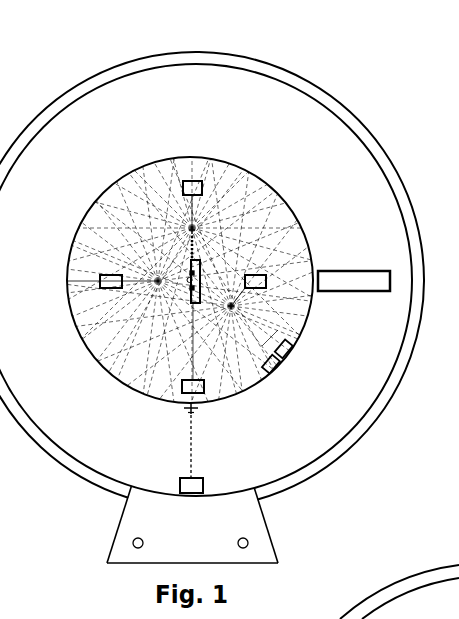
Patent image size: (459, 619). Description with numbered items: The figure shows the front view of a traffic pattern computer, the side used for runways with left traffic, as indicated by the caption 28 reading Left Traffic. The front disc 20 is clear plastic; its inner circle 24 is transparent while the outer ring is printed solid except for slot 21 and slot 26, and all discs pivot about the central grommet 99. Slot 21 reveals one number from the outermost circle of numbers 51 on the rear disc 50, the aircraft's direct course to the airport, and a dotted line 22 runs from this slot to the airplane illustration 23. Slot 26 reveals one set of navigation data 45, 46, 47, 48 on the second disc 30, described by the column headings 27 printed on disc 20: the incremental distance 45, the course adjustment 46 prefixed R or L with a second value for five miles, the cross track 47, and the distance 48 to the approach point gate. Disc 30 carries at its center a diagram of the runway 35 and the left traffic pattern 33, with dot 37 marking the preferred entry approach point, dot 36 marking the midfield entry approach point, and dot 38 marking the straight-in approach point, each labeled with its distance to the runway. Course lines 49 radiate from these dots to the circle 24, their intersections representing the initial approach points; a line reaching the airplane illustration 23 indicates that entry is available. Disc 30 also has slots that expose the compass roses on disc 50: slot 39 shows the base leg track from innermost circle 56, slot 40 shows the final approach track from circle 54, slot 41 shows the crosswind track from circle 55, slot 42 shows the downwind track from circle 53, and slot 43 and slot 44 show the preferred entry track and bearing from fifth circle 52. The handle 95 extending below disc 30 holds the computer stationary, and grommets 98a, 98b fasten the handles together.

The disc 20 is at (251, 144).
The slot 21 is at (204, 485).
The dotted line 22 is at (194, 450).
The airplane illustration 23 is at (186, 409).
The inner circle 24 is at (254, 393).
The slot 26 is at (358, 292).
The column headings 27 is at (358, 240).
The caption 28 is at (160, 109).
The disc 30 is at (288, 234).
The left traffic pattern 33 is at (201, 270).
The runway 35 is at (190, 291).
The dot 36 is at (159, 284).
The dot 37 is at (229, 304).
The dot 38 is at (191, 236).
The slot 39 is at (262, 292).
The slot 40 is at (183, 185).
The slot 41 is at (100, 289).
The slot 42 is at (182, 386).
The slot 43 is at (263, 371).
The slot 44 is at (305, 326).
The navigation data 45 is at (321, 292).
The navigation data 46 is at (340, 292).
The navigation data 47 is at (361, 292).
The navigation data 48 is at (380, 292).
The course lines 49 is at (112, 318).
The disc 50 is at (197, 64).
The outermost circle of numbers 51 is at (180, 483).
The fifth circle of numbers 52 is at (278, 330).
The fourth circle of numbers 53 is at (204, 386).
The third circle of numbers 54 is at (203, 189).
The second circle of numbers 55 is at (100, 280).
The innermost circle of numbers 56 is at (267, 279).
The handle 95 is at (259, 506).
The grommet 98a is at (143, 541).
The grommet 98b is at (238, 542).
The grommet 99 is at (188, 277).